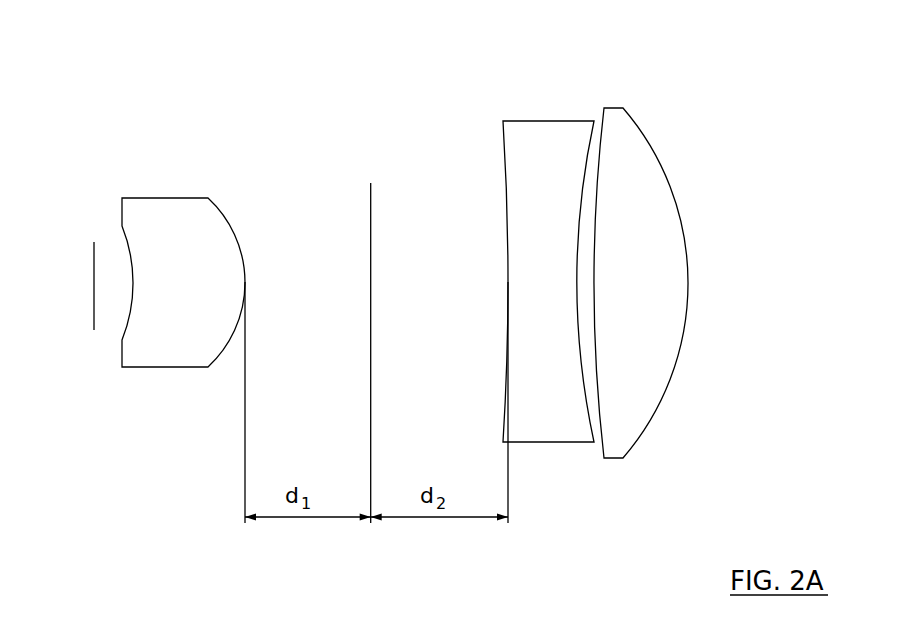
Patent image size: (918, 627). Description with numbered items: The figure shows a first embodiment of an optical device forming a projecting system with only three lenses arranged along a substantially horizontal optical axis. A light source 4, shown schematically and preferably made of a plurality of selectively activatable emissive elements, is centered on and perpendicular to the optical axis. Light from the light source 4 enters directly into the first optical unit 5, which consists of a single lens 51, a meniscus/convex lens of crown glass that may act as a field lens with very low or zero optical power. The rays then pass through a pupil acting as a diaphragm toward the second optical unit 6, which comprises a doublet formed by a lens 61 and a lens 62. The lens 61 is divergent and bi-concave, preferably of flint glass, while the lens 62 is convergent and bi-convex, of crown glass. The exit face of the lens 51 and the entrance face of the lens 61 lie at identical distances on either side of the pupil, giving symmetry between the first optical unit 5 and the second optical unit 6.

The light source 4 is at (94, 328).
The first optical unit 5 is at (199, 261).
The lens 51 is at (148, 363).
The second optical unit 6 is at (595, 264).
The lens 61 is at (530, 438).
The lens 62 is at (618, 449).